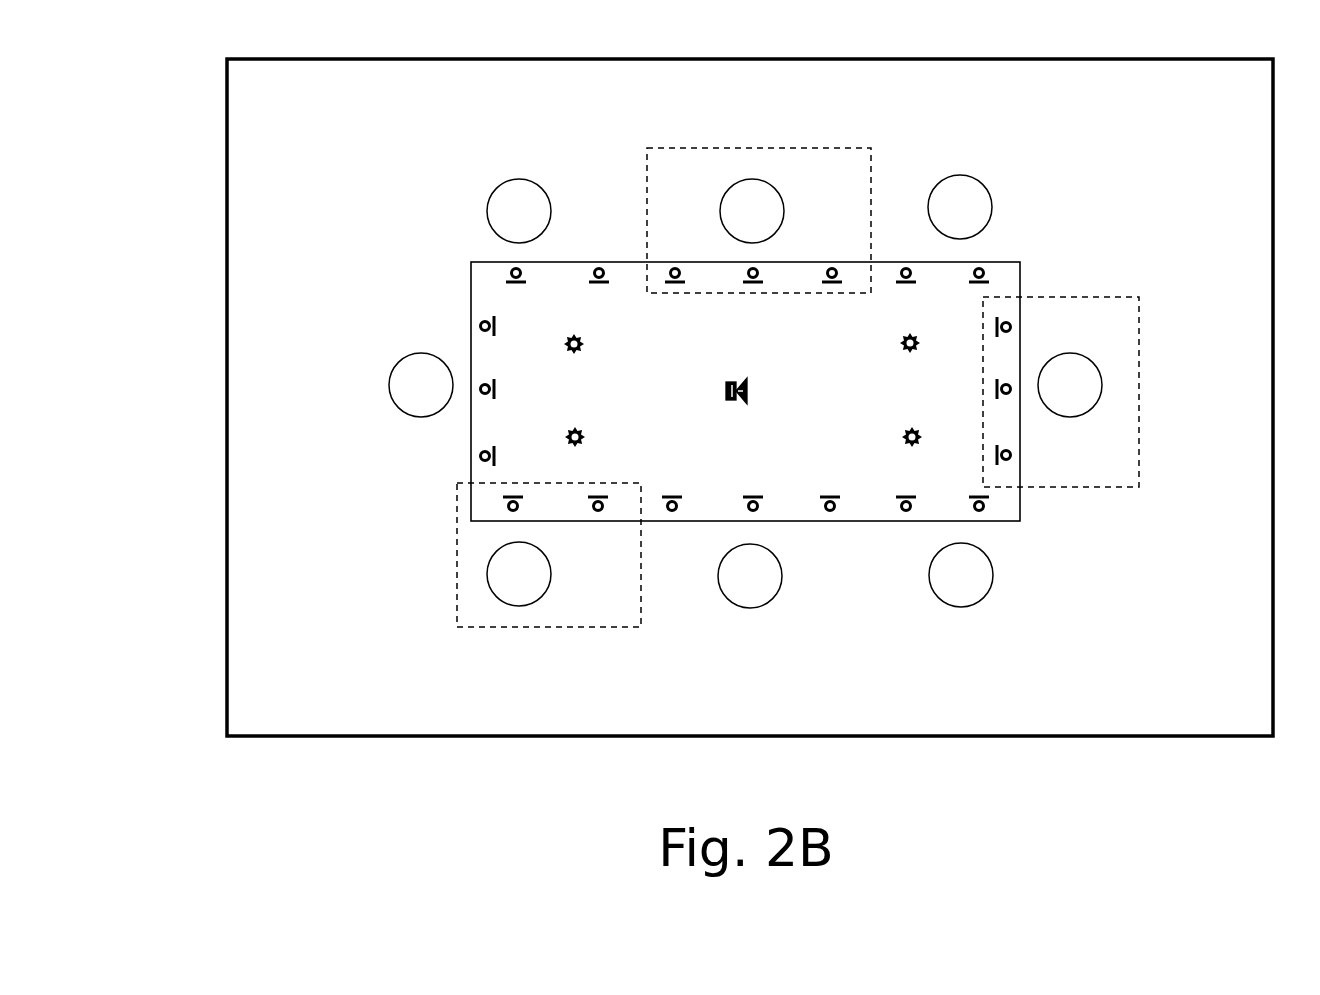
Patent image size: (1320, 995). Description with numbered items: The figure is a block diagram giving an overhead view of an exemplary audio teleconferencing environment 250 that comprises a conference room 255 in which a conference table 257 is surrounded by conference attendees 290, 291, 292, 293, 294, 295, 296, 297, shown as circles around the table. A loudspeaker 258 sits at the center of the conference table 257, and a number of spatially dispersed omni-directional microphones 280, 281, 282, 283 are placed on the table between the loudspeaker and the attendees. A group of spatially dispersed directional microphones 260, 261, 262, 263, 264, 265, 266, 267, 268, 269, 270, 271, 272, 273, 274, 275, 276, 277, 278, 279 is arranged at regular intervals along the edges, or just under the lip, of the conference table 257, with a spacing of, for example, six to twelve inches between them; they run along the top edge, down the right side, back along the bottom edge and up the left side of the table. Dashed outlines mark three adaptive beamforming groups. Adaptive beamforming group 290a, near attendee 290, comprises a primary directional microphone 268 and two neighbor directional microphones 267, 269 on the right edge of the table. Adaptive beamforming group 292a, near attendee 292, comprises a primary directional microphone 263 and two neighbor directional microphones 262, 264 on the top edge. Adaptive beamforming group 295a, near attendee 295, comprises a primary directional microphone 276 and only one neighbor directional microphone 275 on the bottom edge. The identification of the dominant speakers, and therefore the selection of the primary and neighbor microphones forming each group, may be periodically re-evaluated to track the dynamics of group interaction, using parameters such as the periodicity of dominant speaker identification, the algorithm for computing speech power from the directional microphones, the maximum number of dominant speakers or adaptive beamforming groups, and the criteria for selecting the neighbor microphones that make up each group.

The audio teleconferencing environment 250 is at (182, 60).
The conference room 255 is at (226, 432).
The conference table 257 is at (470, 296).
The loudspeaker 258 is at (725, 388).
The directional microphone 260 is at (520, 287).
The directional microphone 261 is at (601, 288).
The neighbor directional microphone 262 is at (677, 290).
The primary directional microphone 263 is at (754, 290).
The neighbor directional microphone 264 is at (834, 290).
The directional microphone 265 is at (905, 288).
The directional microphone 266 is at (976, 288).
The neighbor directional microphone 267 is at (994, 326).
The primary directional microphone 268 is at (994, 390).
The neighbor directional microphone 269 is at (995, 452).
The directional microphone 270 is at (980, 494).
The directional microphone 271 is at (906, 493).
The directional microphone 272 is at (832, 493).
The directional microphone 273 is at (753, 493).
The directional microphone 274 is at (675, 493).
The neighbor directional microphone 275 is at (600, 493).
The primary directional microphone 276 is at (516, 493).
The directional microphone 277 is at (500, 455).
The directional microphone 278 is at (499, 389).
The directional microphone 279 is at (498, 330).
The omni-directional microphone 280 is at (584, 351).
The omni-directional microphone 281 is at (585, 432).
The omni-directional microphone 282 is at (903, 433).
The omni-directional microphone 283 is at (901, 351).
The conference attendee 290 is at (1070, 385).
The adaptive beamforming group 290a is at (1081, 296).
The conference attendee 291 is at (960, 207).
The conference attendee 292 is at (752, 211).
The adaptive beamforming group 292a is at (803, 147).
The conference attendee 293 is at (519, 211).
The conference attendee 294 is at (421, 385).
The conference attendee 295 is at (519, 574).
The adaptive beamforming group 295a is at (455, 605).
The conference attendee 296 is at (750, 576).
The conference attendee 297 is at (961, 575).